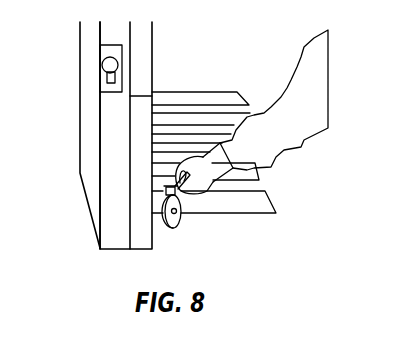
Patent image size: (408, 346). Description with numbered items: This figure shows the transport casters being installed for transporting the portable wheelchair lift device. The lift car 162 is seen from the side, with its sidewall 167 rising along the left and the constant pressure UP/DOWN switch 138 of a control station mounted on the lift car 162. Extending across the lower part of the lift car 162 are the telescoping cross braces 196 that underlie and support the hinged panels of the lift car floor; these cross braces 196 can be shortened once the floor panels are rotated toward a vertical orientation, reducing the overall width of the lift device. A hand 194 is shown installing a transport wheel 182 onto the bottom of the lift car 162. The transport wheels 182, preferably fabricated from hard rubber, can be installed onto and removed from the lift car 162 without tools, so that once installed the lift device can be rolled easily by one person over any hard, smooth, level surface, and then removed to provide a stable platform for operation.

The lift car 162 is at (97, 33).
The UP/DOWN switch 138 is at (100, 62).
The sidewall 167 is at (89, 133).
The telescoping cross brace 196 is at (218, 117).
The hand 194 is at (319, 92).
The transport wheel 182 is at (180, 225).